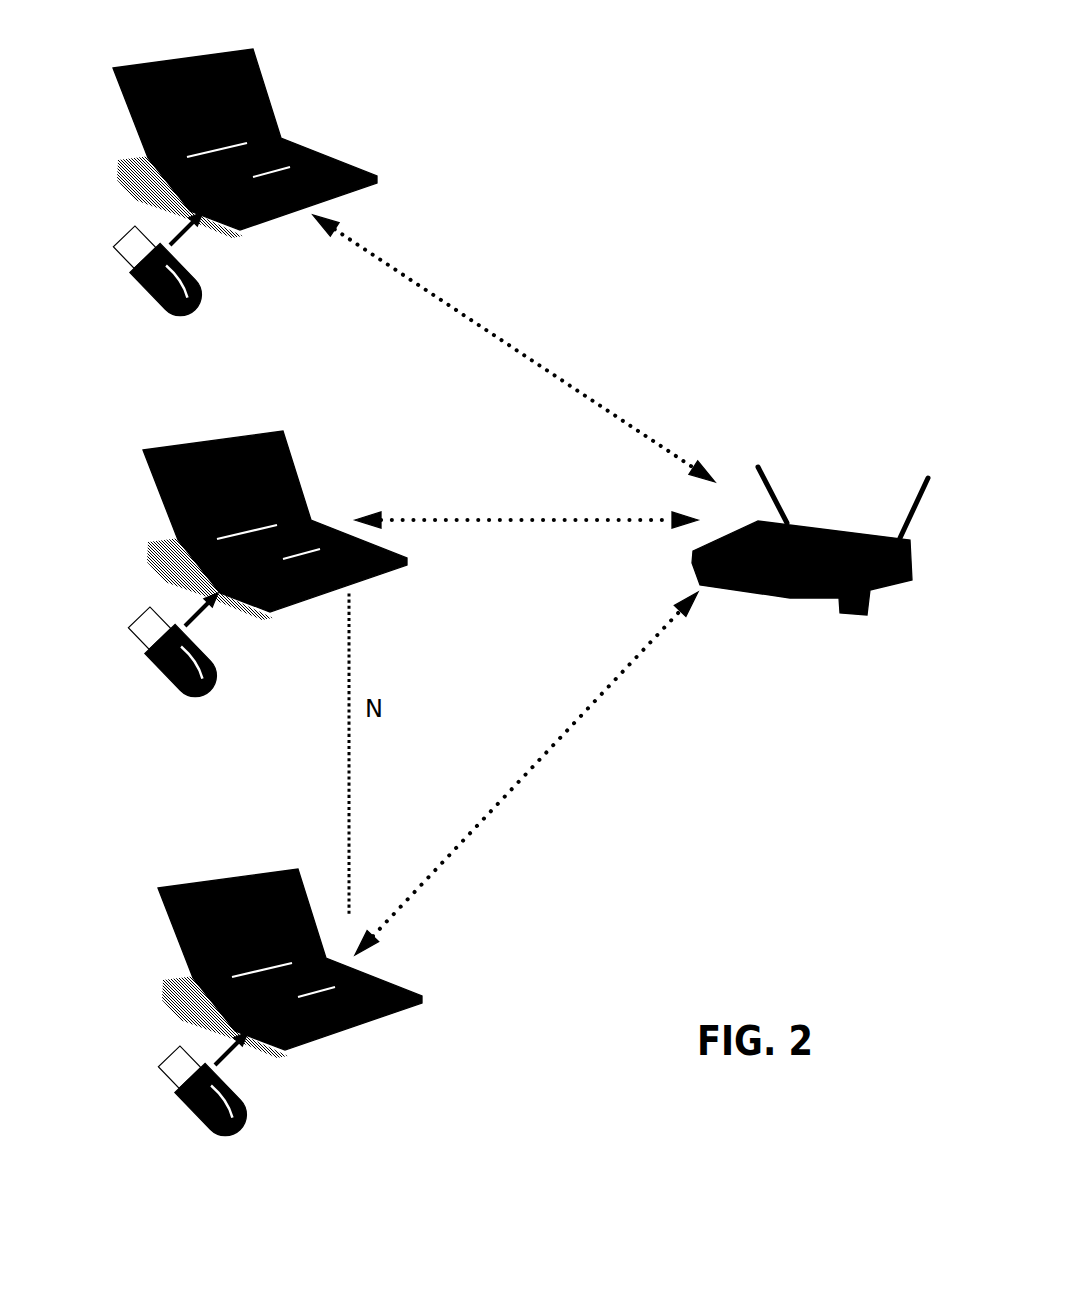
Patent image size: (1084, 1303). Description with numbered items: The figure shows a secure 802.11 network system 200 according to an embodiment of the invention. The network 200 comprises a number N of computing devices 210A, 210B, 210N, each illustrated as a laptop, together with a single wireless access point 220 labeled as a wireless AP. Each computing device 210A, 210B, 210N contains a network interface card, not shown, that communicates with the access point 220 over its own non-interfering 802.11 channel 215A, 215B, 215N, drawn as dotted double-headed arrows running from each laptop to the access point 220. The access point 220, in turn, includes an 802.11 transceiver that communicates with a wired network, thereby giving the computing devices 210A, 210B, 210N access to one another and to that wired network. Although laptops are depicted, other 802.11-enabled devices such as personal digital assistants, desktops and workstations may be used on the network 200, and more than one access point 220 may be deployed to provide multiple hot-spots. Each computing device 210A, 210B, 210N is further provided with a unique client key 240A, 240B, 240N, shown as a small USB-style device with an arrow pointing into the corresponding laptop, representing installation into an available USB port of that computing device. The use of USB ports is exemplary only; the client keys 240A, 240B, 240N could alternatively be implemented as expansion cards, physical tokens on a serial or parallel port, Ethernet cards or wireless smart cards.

The secure 802.11 network system 200 is at (847, 85).
The computing device 210A is at (259, 62).
The computing device 210B is at (305, 473).
The computing device 210N is at (399, 970).
The 802.11 channel 215A is at (518, 350).
The 802.11 channel 215B is at (488, 518).
The 802.11 channel 215N is at (503, 797).
The wireless access point 220 is at (813, 518).
The client key 240A is at (168, 313).
The client key 240B is at (181, 691).
The client key 240N is at (214, 1132).